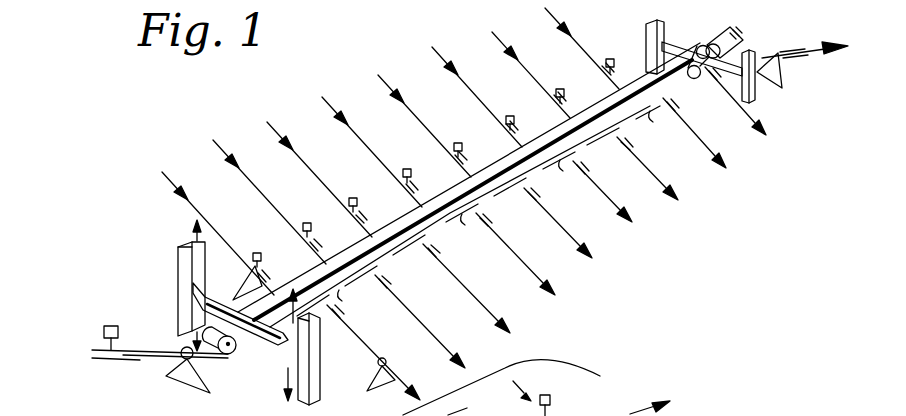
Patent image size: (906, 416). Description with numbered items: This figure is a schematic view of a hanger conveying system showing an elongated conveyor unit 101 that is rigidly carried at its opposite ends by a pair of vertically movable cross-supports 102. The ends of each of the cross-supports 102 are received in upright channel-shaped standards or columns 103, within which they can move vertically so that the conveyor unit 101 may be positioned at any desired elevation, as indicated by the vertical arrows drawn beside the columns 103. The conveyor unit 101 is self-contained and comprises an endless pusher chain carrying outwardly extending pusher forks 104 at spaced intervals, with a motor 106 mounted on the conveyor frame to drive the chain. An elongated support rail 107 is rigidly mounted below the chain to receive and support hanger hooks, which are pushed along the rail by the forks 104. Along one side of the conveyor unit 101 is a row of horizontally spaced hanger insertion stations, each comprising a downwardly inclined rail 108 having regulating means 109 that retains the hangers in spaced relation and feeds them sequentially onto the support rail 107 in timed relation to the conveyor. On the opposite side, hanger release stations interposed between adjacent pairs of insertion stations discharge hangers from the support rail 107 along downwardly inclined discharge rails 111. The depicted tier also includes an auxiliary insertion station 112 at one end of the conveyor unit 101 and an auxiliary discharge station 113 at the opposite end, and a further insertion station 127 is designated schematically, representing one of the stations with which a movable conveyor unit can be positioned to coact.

The conveyor unit 101 is at (528, 137).
The cross-supports 102 is at (243, 352).
The channel-shaped standards or columns 103 is at (179, 276).
The pusher forks 104 is at (242, 353).
The motor 106 is at (724, 30).
The support rail 107 is at (387, 256).
The downwardly inclined rail 108 is at (254, 184).
The regulating means 109 is at (257, 252).
The discharge rails 111 is at (418, 322).
The auxiliary insertion station 112 is at (155, 365).
The auxiliary discharge station 113 is at (812, 68).
The insertion station 127 is at (553, 402).